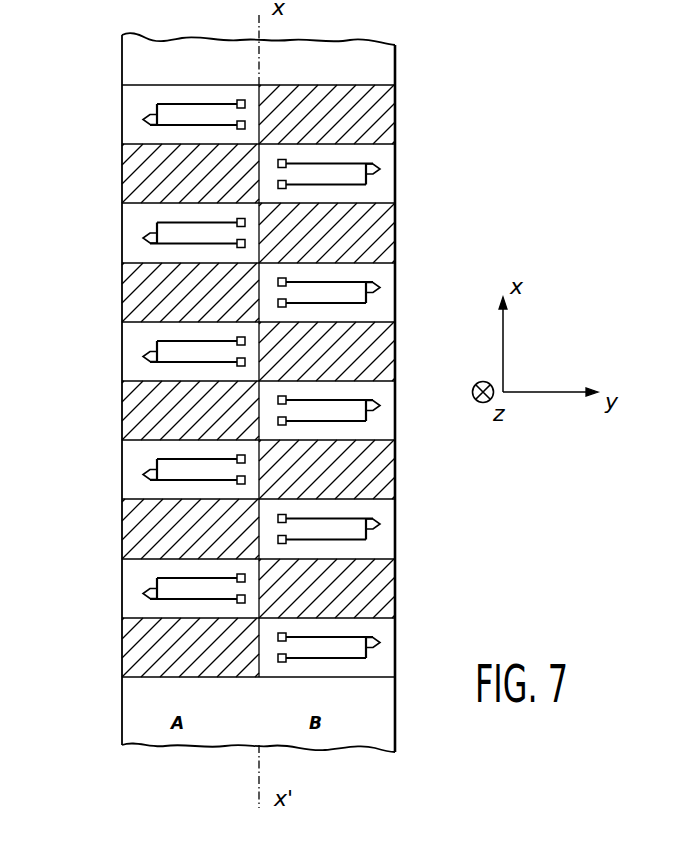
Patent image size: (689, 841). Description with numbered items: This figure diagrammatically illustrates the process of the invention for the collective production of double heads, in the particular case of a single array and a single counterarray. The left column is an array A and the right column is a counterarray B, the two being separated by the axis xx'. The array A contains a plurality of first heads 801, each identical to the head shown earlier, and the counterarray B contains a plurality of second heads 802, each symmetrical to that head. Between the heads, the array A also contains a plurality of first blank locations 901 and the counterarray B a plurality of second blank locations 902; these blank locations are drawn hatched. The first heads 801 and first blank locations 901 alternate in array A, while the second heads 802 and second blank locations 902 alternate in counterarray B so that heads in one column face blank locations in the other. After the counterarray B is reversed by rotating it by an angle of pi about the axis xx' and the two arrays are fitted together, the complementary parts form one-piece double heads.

The first heads 801 is at (140, 356).
The second heads 802 is at (380, 288).
The first blank locations 901 is at (120, 636).
The second blank locations 902 is at (385, 572).